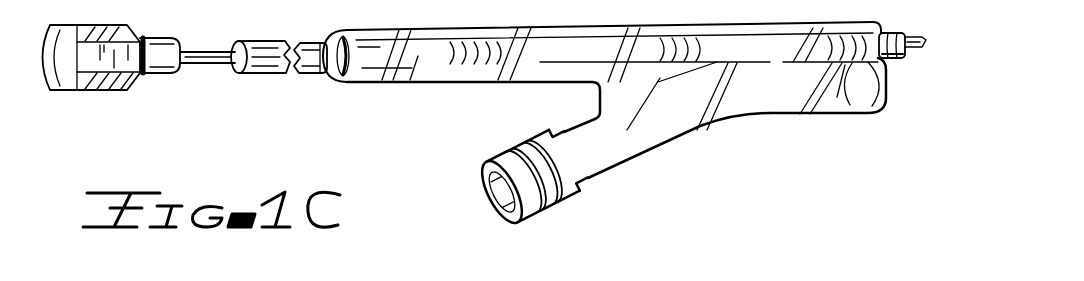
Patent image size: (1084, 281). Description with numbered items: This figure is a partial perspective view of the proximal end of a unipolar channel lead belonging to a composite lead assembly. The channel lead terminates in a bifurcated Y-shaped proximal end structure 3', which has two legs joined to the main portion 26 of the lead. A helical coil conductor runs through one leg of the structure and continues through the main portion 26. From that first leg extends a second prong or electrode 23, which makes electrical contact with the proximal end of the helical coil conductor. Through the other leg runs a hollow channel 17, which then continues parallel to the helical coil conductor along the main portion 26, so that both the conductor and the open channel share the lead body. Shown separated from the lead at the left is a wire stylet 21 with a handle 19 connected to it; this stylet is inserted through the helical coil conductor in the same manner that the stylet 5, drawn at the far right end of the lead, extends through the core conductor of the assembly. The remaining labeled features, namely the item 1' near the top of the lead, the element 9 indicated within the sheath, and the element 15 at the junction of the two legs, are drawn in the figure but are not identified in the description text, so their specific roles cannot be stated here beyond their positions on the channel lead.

The handle 19 is at (117, 78).
The wire stylet 21 is at (210, 63).
The second prong or electrode 23 is at (267, 72).
The bifurcated Y-shaped proximal end structure 3' is at (610, 20).
The connector assembly 1' is at (514, 40).
The inner tube 9 is at (482, 68).
The housing body 15 is at (567, 85).
The main portion of the channel lead 26 is at (746, 27).
The hollow channel 17 is at (482, 186).
The stylet 5 is at (893, 30).